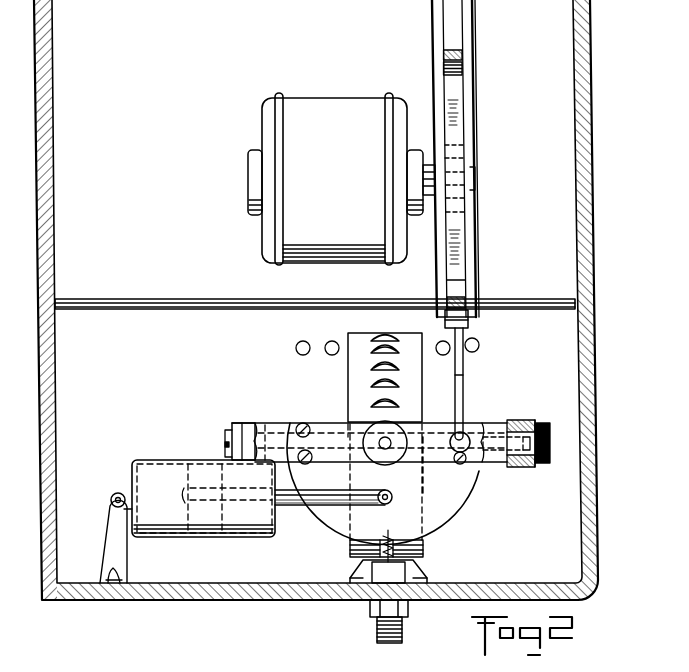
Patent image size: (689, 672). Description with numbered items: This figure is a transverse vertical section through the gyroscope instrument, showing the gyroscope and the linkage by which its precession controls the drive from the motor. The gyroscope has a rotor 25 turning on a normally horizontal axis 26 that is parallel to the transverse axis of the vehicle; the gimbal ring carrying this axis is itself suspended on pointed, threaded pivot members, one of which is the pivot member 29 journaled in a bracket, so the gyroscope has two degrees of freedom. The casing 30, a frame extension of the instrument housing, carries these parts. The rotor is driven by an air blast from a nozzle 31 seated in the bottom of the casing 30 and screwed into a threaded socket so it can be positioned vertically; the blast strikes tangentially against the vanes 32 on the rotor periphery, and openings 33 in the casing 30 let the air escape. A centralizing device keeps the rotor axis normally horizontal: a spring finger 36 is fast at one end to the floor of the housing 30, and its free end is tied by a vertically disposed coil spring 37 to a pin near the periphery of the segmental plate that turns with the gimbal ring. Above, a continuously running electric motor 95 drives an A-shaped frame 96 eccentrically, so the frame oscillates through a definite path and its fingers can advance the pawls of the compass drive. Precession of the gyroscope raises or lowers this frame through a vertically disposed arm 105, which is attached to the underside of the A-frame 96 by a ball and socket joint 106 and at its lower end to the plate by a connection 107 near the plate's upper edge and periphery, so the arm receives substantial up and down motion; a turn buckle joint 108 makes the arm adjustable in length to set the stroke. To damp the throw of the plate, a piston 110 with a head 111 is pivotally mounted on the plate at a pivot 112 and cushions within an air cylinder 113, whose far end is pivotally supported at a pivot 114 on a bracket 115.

The rotor 25 is at (363, 339).
The rotor axis 26 is at (496, 433).
The fixed pivot member 29 is at (383, 446).
The frame extension / casing 30 is at (555, 533).
The nozzle 31 is at (402, 633).
The vanes 32 is at (372, 403).
The openings 33 is at (478, 341).
The spring finger 36 is at (370, 601).
The coil spring 37 is at (392, 541).
The electric motor 95 is at (327, 110).
The A-shaped frame 96 is at (455, 125).
The vertically disposed arm 105 is at (459, 363).
The ball and socket joint 106 is at (445, 320).
The connection 107 is at (452, 463).
The turn buckle joint 108 is at (461, 376).
The piston 110 is at (302, 505).
The piston head 111 is at (224, 459).
The pivot 112 is at (391, 495).
The air cylinder 113 is at (186, 460).
The pivot 114 is at (112, 501).
The bracket 115 is at (103, 597).